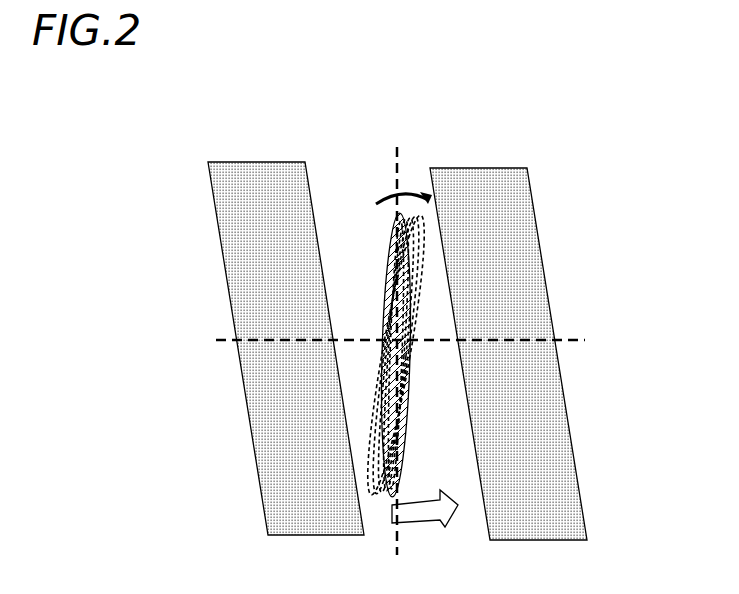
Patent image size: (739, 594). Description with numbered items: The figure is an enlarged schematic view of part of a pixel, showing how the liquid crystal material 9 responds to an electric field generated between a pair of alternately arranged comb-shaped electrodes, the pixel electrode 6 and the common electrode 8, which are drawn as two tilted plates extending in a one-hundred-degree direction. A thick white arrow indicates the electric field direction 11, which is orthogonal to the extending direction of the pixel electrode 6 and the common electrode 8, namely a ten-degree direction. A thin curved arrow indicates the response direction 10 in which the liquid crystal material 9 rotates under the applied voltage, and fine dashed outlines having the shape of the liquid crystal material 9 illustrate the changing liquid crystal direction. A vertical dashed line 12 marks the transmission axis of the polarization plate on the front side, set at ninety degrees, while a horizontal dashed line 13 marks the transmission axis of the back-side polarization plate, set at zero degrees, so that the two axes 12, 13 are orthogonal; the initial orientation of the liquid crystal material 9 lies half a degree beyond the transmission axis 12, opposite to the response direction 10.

The pixel electrode 6 is at (547, 373).
The common electrode 8 is at (225, 218).
The liquid crystal material 9 is at (383, 218).
The response direction 10 is at (428, 196).
The electric field direction 11 is at (438, 510).
The transmission axis of the front polarization plate 12 is at (400, 155).
The transmission axis of the back polarization plate 13 is at (572, 340).